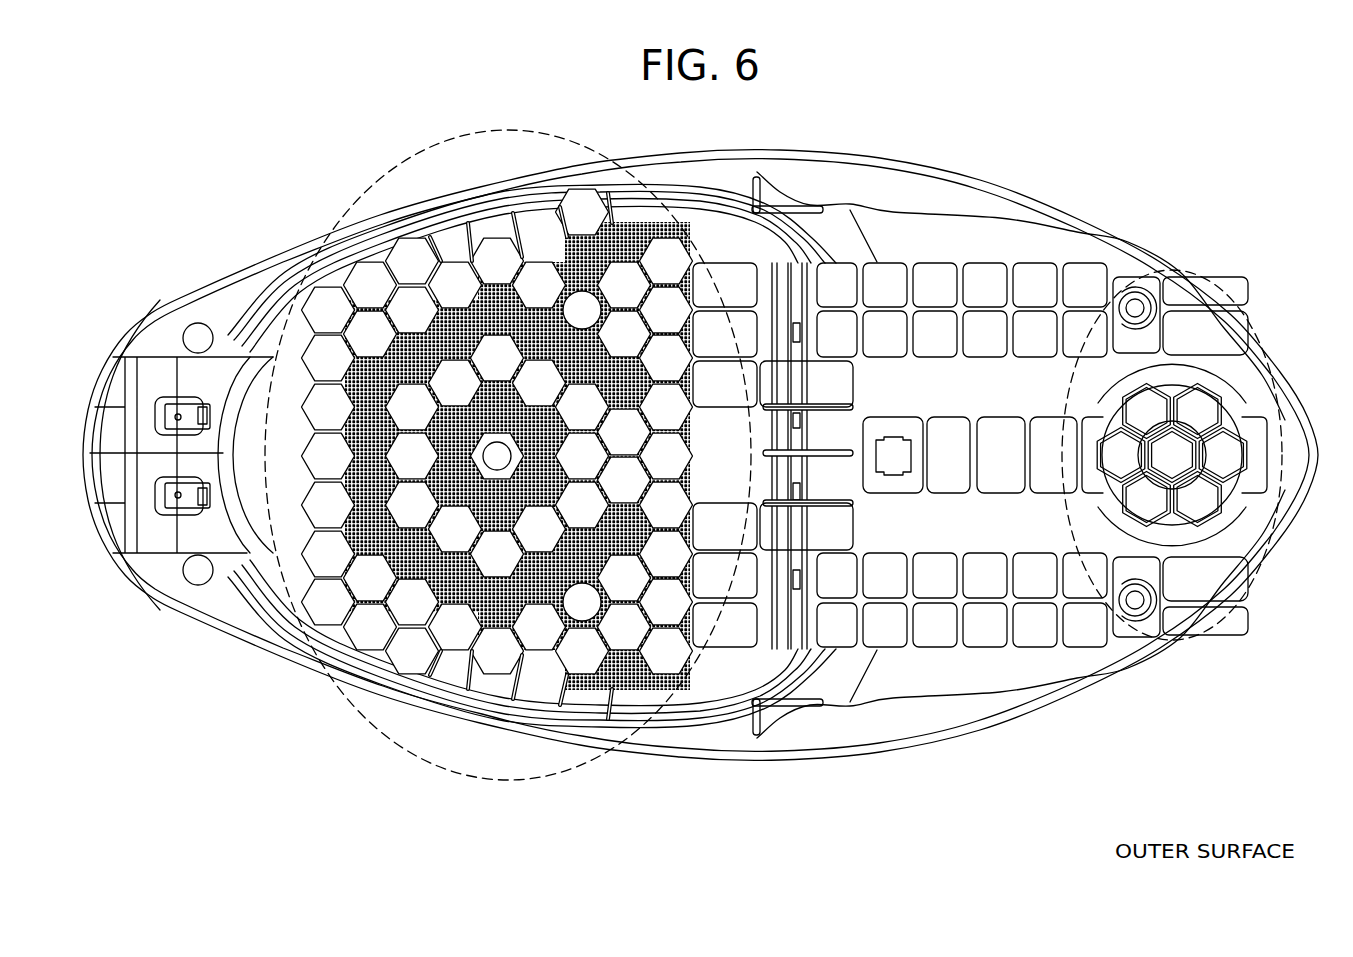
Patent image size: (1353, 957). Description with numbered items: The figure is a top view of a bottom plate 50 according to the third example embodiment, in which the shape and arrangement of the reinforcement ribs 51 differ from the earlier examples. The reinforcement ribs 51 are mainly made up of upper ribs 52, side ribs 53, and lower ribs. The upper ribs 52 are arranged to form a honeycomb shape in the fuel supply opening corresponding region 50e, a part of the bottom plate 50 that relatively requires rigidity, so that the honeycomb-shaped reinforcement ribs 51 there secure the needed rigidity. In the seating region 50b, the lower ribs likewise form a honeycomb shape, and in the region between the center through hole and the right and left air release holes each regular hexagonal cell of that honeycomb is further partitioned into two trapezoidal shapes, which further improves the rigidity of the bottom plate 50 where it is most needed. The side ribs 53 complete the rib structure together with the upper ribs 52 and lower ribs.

The bottom plate 50 is at (175, 122).
The seating region 50b is at (452, 130).
The fuel supply opening corresponding region 50e is at (1186, 272).
The reinforcement ribs 51 is at (774, 535).
The upper ribs 52 is at (485, 540).
The side ribs 53 is at (521, 667).